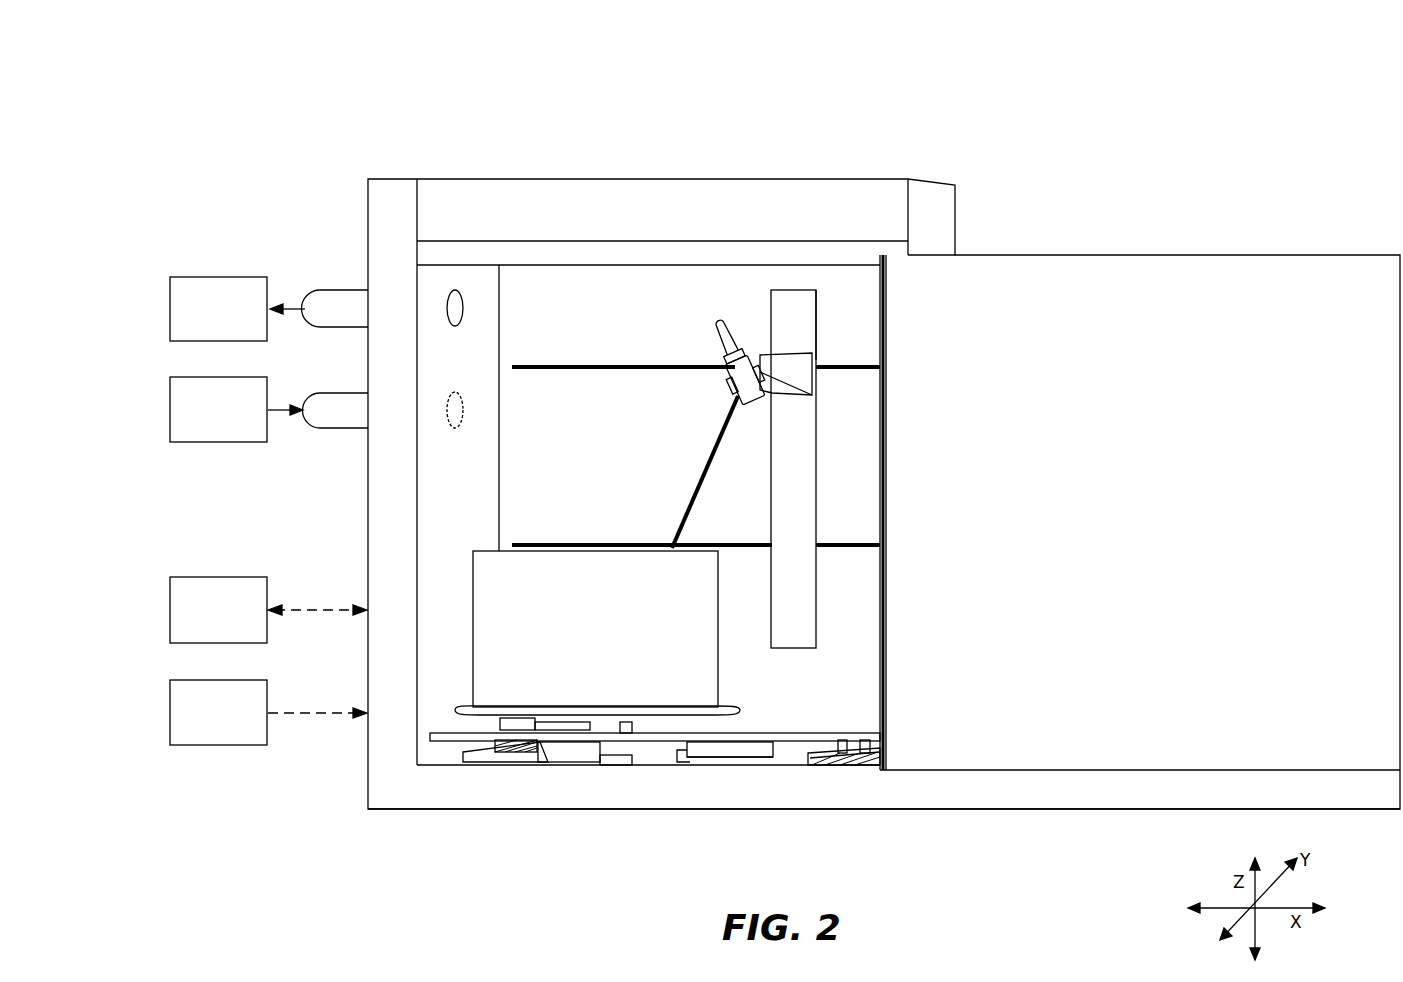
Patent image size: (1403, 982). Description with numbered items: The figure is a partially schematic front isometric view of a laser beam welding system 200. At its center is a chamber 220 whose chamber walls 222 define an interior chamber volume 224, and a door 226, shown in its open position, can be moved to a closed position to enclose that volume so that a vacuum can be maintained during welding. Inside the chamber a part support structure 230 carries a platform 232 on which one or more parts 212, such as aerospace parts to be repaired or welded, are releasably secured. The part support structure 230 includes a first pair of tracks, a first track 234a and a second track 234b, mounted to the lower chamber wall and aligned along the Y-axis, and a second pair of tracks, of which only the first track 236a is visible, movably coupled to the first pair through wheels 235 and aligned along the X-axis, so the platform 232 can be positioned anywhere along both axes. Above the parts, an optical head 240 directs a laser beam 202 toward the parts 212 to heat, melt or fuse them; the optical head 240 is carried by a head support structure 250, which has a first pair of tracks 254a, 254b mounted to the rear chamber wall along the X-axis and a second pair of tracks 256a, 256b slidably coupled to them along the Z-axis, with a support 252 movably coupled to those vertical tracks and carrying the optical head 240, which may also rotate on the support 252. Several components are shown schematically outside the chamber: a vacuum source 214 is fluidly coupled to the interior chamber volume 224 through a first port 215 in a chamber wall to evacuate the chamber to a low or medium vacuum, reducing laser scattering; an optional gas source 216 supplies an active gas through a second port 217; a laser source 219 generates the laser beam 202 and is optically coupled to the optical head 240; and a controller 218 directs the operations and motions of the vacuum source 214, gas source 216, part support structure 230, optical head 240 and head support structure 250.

The laser beam welding (LBW) system 200 is at (284, 117).
The laser beam 202 is at (716, 432).
The parts 212 is at (595, 629).
The vacuum source 214 is at (237, 309).
The first port 215 is at (320, 305).
The gas source 216 is at (236, 409).
The second port 217 is at (322, 412).
The controller 218 is at (268, 610).
The laser source 219 is at (268, 712).
The chamber 220 is at (390, 204).
The chamber walls 222 is at (393, 730).
The interior chamber volume 224 is at (598, 293).
The door 226 is at (1168, 282).
The part support structure 230 is at (668, 776).
The platform 232 is at (587, 712).
The first track 234a is at (492, 766).
The second track 234b is at (835, 770).
The wheels 235 is at (855, 770).
The first track 236a is at (773, 770).
The optical head 240 is at (740, 355).
The head support structure 250 is at (712, 335).
The support 252 is at (815, 352).
The first track 254a is at (530, 367).
The second track 254b is at (846, 545).
The first track 256a is at (771, 296).
The second track 256b is at (816, 292).